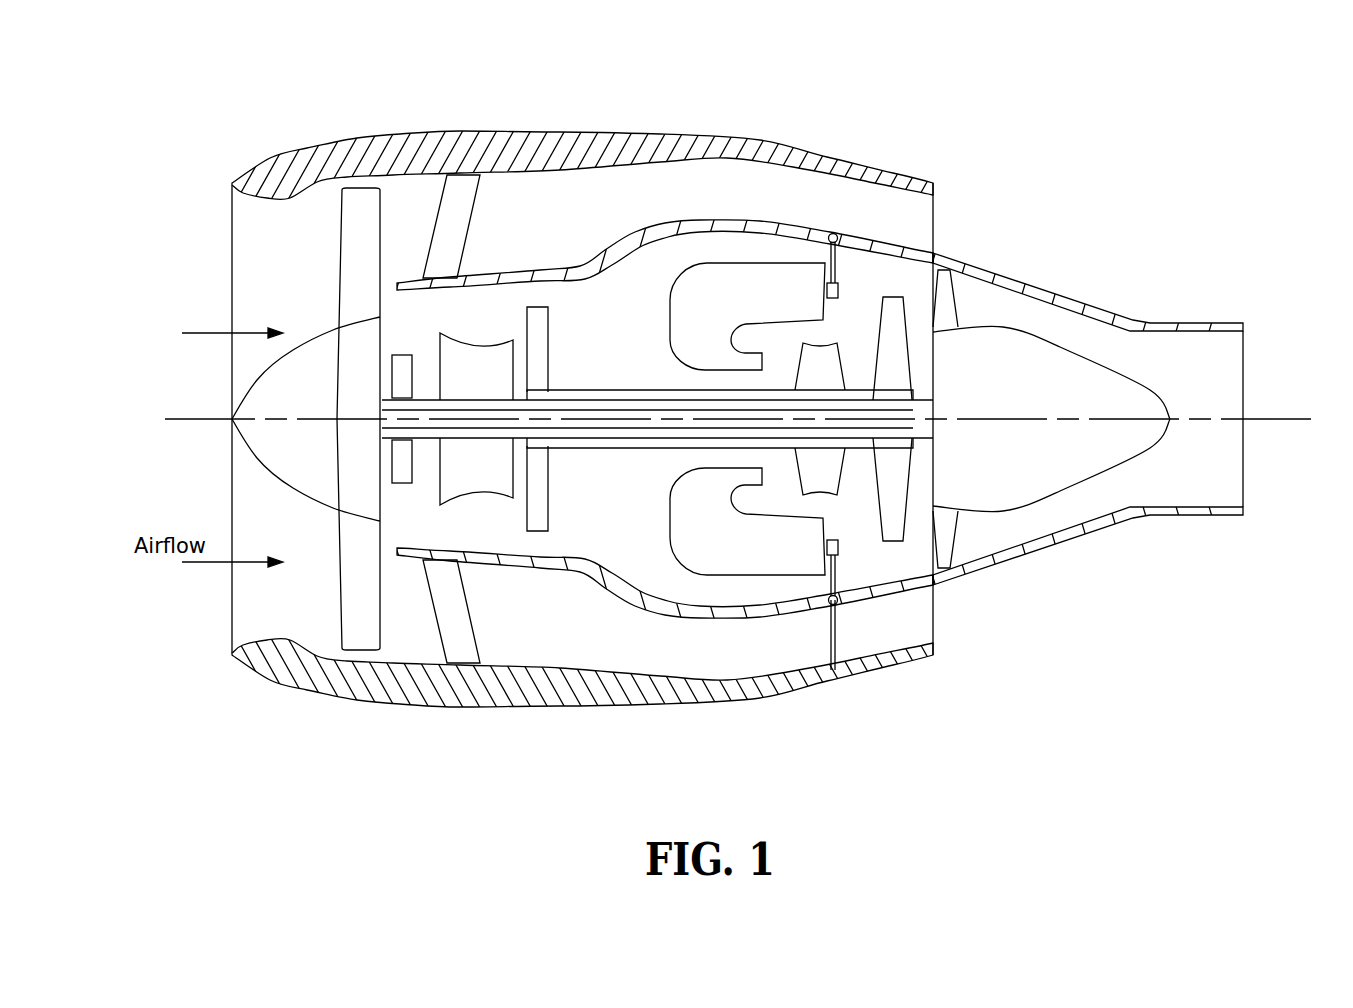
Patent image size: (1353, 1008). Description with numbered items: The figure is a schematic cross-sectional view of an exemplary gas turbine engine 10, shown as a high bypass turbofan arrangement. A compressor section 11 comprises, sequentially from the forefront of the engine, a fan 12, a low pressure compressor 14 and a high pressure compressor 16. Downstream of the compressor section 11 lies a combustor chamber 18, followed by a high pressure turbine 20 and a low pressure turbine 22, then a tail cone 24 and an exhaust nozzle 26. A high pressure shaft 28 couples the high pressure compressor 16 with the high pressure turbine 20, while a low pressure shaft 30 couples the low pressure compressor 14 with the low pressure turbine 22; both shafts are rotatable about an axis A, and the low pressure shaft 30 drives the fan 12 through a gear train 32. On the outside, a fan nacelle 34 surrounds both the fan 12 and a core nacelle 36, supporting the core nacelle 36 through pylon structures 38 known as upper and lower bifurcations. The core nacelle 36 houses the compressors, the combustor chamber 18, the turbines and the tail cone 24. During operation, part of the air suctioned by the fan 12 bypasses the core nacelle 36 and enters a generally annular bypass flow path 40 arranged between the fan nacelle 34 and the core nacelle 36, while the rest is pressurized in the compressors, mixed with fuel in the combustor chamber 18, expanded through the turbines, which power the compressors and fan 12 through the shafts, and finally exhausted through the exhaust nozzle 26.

The gas turbine engine 10 is at (178, 163).
The compressor section 11 is at (413, 207).
The fan 12 is at (372, 288).
The low pressure compressor 14 is at (480, 385).
The high pressure compressor 16 is at (550, 325).
The combustor chamber 18 is at (747, 277).
The high pressure turbine 20 is at (897, 318).
The low pressure turbine 22 is at (905, 297).
The tail cone 24 is at (1100, 378).
The exhaust nozzle 26 is at (1045, 323).
The high pressure shaft 28 is at (612, 393).
The low pressure shaft 30 is at (573, 400).
The gear train 32 is at (405, 382).
The fan nacelle 34 is at (488, 148).
The core nacelle 36 is at (590, 270).
The pylon structures 38 is at (458, 200).
The bypass flow path 40 is at (686, 660).
The axis A is at (1217, 420).